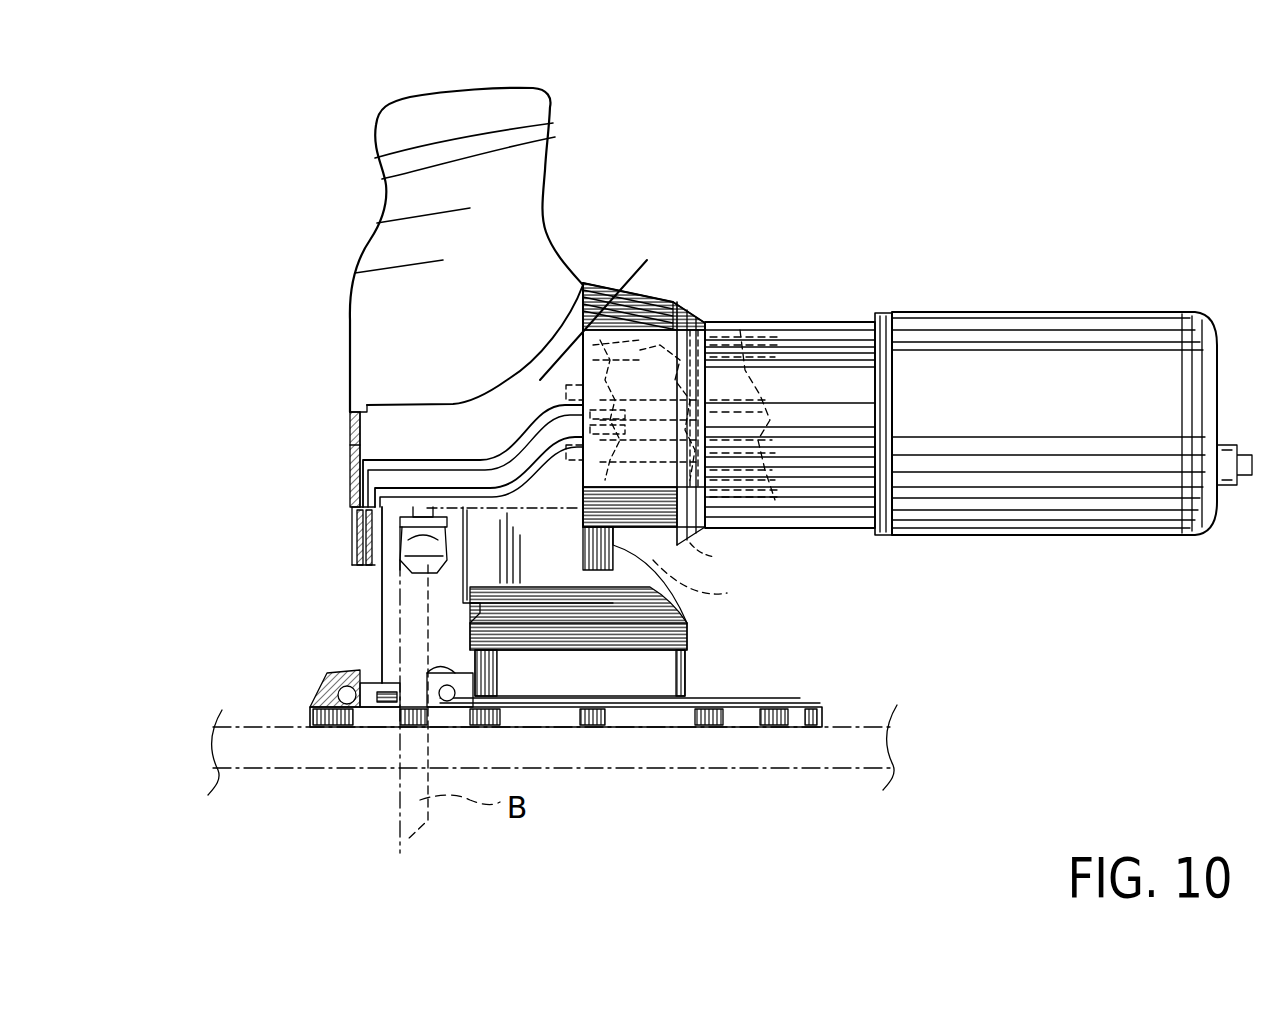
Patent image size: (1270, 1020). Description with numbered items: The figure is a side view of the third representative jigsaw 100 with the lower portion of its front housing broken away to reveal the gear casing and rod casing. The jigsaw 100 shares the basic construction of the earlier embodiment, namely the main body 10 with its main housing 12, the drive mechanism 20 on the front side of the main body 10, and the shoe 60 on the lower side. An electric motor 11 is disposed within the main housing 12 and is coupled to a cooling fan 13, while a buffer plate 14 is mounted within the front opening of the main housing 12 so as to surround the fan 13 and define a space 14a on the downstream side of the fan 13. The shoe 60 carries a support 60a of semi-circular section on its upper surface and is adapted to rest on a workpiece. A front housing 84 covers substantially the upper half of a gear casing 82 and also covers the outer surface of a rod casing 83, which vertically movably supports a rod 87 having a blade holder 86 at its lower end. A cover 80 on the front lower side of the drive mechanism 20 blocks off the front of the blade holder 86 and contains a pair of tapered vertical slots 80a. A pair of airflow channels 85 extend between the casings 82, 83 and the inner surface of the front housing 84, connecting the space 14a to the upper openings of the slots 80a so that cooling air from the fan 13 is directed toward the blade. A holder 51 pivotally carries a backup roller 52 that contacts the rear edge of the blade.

The main body 10 is at (943, 300).
The electric motor 11 is at (797, 318).
The main housing 12 is at (853, 318).
The cooling fan 13 is at (730, 333).
The buffer plate 14 is at (715, 557).
The space 14a is at (727, 593).
The drive mechanism 20 is at (332, 299).
The holder 51 is at (320, 660).
The backup roller 52 is at (320, 660).
The shoe 60 is at (807, 697).
The support 60a is at (683, 667).
The cover 80 is at (351, 537).
The vertical slots 80a is at (351, 559).
The gear casing 82 is at (640, 313).
The rod casing 83 is at (400, 432).
The front housing 84 is at (523, 240).
The airflow channels 85 is at (500, 472).
The blade holder 86 is at (396, 568).
The rod 87 is at (351, 516).
The third representative jigsaw 100 is at (715, 264).